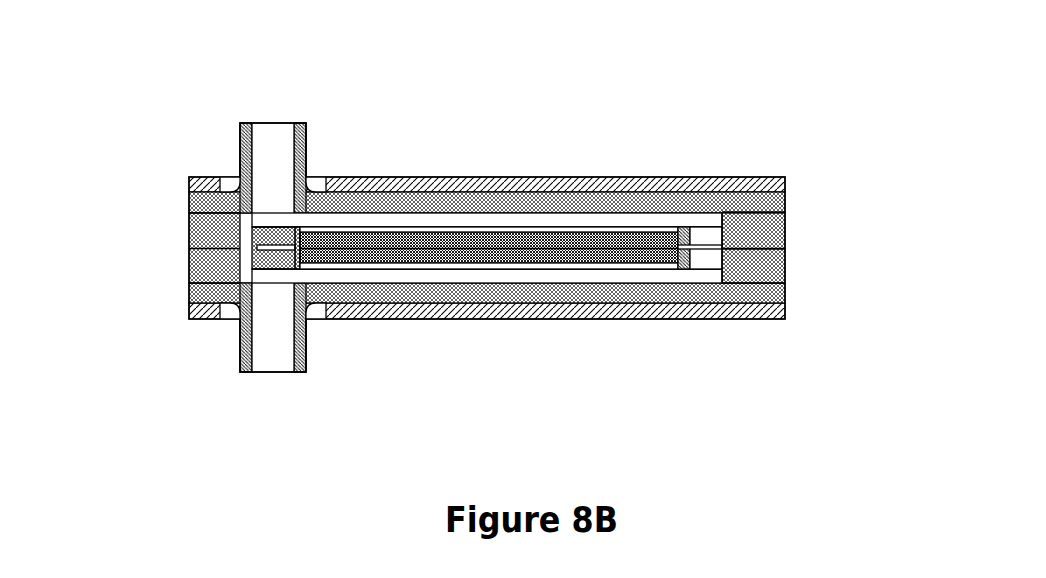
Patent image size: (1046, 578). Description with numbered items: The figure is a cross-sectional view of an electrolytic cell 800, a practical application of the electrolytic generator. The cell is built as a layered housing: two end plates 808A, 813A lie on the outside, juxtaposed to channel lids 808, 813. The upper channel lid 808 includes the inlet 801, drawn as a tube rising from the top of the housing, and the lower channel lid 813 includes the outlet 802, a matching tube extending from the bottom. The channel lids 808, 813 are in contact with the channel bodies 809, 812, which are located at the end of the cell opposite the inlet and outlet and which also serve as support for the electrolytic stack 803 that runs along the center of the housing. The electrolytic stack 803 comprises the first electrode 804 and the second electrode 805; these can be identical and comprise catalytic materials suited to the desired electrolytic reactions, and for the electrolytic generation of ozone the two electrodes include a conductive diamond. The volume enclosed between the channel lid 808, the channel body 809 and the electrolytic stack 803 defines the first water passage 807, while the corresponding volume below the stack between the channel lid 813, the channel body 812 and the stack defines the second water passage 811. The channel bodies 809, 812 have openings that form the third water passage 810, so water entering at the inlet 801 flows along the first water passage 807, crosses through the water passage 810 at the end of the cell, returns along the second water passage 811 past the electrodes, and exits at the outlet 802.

The electrolytic cell 800 is at (735, 107).
The inlet 801 is at (272, 133).
The outlet 802 is at (272, 358).
The electrolytic stack 803 is at (493, 271).
The first electrode 804 is at (593, 240).
The second electrode 805 is at (543, 264).
The first water passage 807 is at (563, 218).
The channel lid 808 is at (438, 200).
The end plate 808A is at (492, 182).
The channel body 809 is at (765, 233).
The third water passage 810 is at (707, 225).
The second water passage 811 is at (612, 276).
The channel body 812 is at (772, 272).
The channel lid 813 is at (425, 300).
The end plate 813A is at (469, 310).